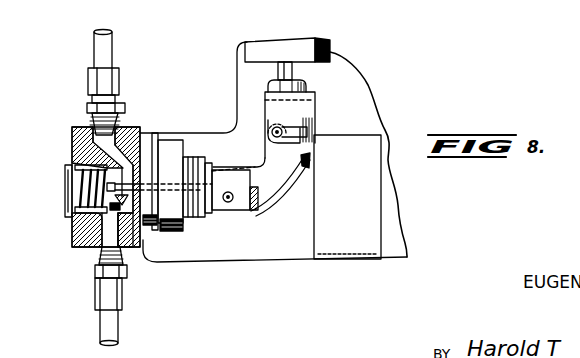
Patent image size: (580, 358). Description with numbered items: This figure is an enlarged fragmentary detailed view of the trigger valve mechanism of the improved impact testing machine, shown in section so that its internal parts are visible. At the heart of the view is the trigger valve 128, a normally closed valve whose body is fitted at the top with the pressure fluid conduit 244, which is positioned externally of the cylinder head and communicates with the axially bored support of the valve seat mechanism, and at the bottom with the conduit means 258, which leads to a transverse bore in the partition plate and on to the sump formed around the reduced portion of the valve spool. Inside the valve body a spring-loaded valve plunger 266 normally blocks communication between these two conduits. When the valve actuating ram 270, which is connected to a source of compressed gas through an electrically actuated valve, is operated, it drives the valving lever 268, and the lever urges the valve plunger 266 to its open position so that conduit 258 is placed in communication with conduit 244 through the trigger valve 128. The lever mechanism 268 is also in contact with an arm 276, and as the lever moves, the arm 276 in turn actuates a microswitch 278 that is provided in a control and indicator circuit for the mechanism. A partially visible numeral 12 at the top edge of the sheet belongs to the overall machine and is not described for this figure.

The apparatus 12 is at (411, 4).
The trigger valve 128 is at (62, 130).
The pressure fluid conduit 244 is at (100, 48).
The conduit means 258 is at (100, 322).
The valve plunger 266 is at (123, 228).
The valving lever 268 is at (267, 204).
The valve actuating ram 270 is at (262, 45).
The arm 276 is at (296, 188).
The microswitch 278 is at (381, 261).